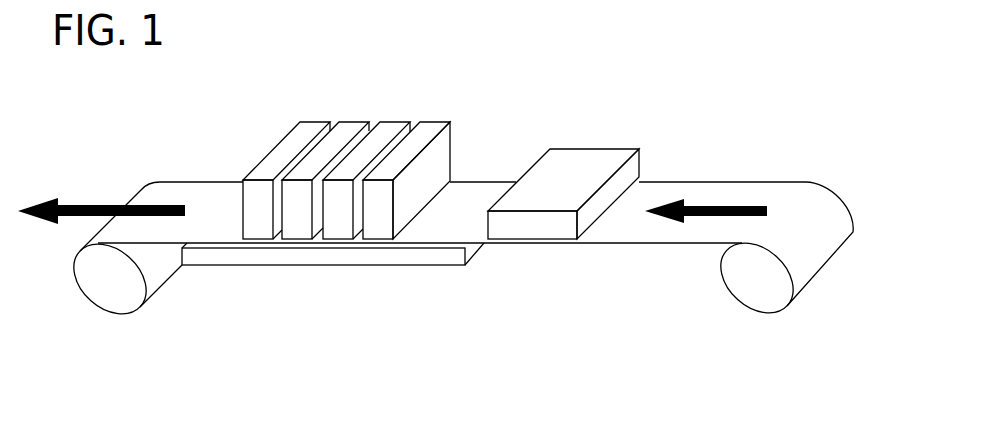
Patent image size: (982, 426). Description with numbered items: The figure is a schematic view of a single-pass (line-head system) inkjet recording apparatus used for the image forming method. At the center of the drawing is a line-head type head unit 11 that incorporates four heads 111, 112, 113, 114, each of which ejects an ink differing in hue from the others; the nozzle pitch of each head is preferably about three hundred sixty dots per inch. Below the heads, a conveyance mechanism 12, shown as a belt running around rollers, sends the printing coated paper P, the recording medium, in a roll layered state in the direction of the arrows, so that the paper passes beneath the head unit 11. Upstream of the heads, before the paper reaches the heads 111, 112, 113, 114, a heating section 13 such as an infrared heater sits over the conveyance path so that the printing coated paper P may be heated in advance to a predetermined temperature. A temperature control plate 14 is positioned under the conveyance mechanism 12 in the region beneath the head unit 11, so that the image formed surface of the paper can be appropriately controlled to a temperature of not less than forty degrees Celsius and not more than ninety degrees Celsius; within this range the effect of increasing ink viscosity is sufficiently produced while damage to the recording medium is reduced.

The head unit 11 is at (348, 123).
The head 111 is at (313, 127).
The head 112 is at (354, 127).
The head 113 is at (393, 127).
The head 114 is at (408, 160).
The conveyance mechanism 12 is at (738, 286).
The heating section 13 is at (587, 168).
The temperature control plate 14 is at (331, 258).
The printing coated paper P is at (716, 195).